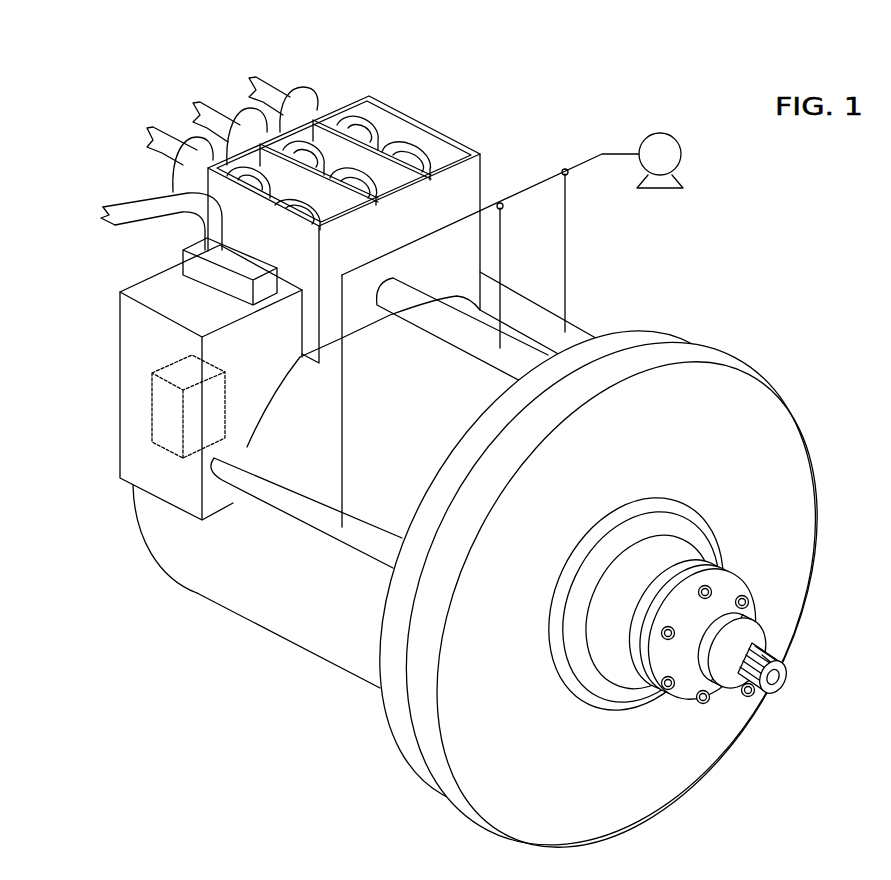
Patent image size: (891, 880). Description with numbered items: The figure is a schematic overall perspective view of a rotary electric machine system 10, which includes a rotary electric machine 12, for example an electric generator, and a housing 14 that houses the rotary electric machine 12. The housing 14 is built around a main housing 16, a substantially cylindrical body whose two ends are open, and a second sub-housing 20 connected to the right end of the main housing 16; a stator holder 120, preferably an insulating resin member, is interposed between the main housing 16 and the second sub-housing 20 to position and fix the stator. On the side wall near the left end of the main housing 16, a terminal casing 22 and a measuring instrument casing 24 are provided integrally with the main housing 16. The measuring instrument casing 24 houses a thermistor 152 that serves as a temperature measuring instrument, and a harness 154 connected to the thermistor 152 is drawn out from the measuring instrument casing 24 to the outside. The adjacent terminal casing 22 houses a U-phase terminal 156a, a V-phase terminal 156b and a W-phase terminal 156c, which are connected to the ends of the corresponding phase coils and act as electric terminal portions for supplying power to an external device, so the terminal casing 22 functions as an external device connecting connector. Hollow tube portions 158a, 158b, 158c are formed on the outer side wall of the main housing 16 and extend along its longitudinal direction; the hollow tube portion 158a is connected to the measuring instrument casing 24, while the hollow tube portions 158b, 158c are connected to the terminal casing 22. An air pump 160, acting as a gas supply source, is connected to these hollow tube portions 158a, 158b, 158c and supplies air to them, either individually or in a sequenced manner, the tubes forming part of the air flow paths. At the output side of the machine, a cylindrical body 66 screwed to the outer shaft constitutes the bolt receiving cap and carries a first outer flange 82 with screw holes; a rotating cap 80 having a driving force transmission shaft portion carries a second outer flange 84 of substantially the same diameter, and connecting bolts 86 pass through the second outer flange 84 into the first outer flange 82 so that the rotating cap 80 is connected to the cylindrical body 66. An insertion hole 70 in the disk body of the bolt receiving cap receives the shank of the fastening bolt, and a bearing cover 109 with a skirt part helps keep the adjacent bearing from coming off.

The rotary electric machine system 10 is at (808, 249).
The rotary electric machine 12 is at (285, 610).
The housing 14 is at (205, 597).
The main housing 16 is at (248, 619).
The second sub-housing 20 is at (793, 447).
The terminal casing 22 is at (482, 175).
The measuring instrument casing 24 is at (120, 360).
The cylindrical body 66 is at (628, 627).
The first outer flange 82 is at (624, 629).
The insertion hole 70 is at (745, 675).
The rotating cap 80 is at (708, 655).
The second outer flange 84 is at (678, 703).
The connecting bolts 86 is at (748, 602).
The bearing cover 109 is at (657, 556).
The stator holder 120 is at (400, 753).
The thermistor 152 is at (152, 428).
The harness 154 is at (113, 222).
The U-phase terminal 156a is at (337, 205).
The V-phase terminal 156b is at (357, 180).
The W-phase terminal 156c is at (432, 156).
The hollow tube portion 158a is at (312, 518).
The hollow tube portion 158b is at (447, 333).
The hollow tube portion 158c is at (583, 320).
The air pump 160 is at (682, 152).